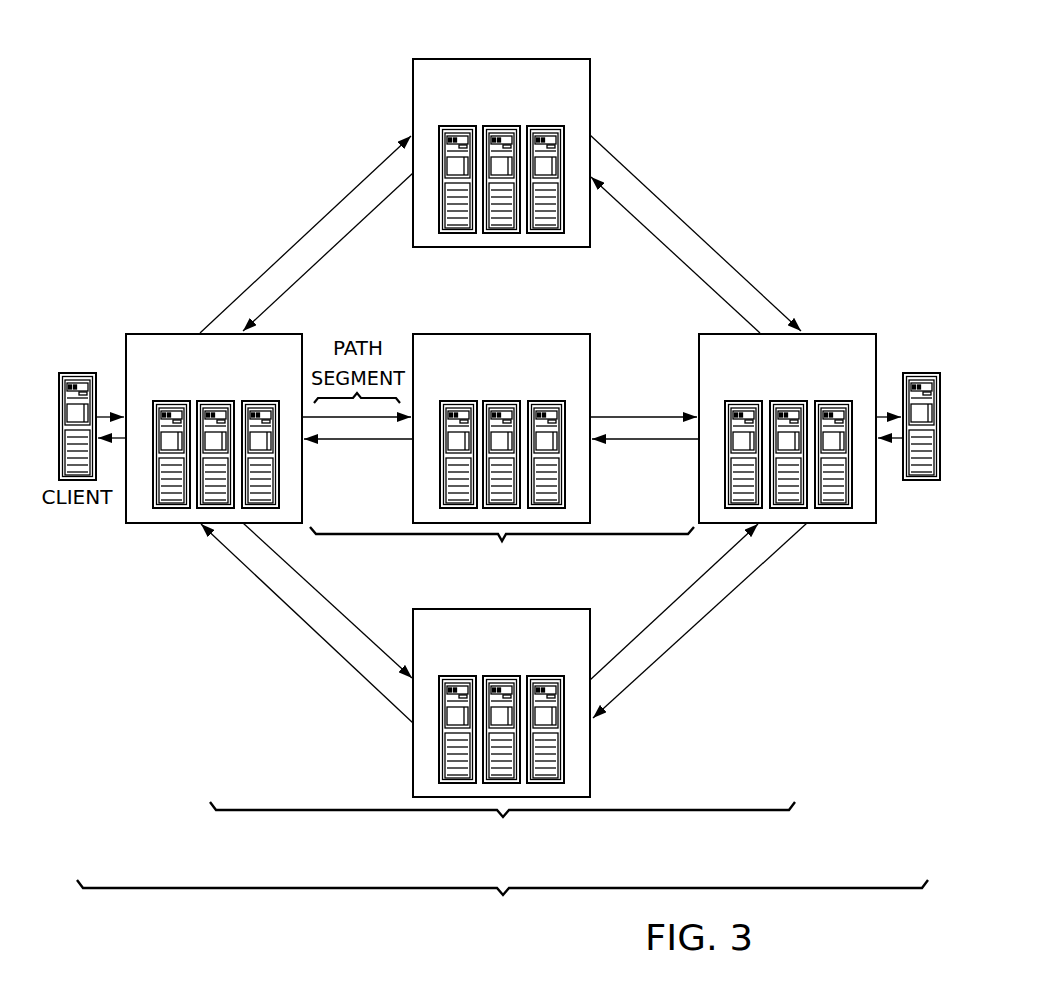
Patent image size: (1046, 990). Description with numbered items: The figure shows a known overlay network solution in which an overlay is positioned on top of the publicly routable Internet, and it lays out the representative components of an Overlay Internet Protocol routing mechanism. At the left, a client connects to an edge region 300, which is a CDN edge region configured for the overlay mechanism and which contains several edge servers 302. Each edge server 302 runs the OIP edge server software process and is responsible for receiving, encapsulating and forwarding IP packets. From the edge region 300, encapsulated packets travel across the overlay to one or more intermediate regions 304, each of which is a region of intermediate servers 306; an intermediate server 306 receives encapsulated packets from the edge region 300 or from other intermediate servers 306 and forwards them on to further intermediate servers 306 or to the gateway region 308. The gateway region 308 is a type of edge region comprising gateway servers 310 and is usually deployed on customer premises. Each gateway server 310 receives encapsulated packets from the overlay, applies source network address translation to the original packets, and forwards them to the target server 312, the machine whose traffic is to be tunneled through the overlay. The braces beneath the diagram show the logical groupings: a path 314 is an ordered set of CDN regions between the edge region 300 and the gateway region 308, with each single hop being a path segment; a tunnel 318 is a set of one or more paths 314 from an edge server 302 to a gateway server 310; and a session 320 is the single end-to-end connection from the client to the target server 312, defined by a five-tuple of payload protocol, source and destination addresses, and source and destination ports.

The edge region 300 is at (165, 330).
The edge server 302 is at (170, 401).
The intermediate region 304 is at (452, 606).
The intermediate server 306 is at (456, 126).
The gateway region 308 is at (836, 330).
The gateway server 310 is at (790, 401).
The target server 312 is at (922, 373).
The path 314 is at (502, 562).
The tunnel 318 is at (502, 837).
The session 320 is at (502, 915).